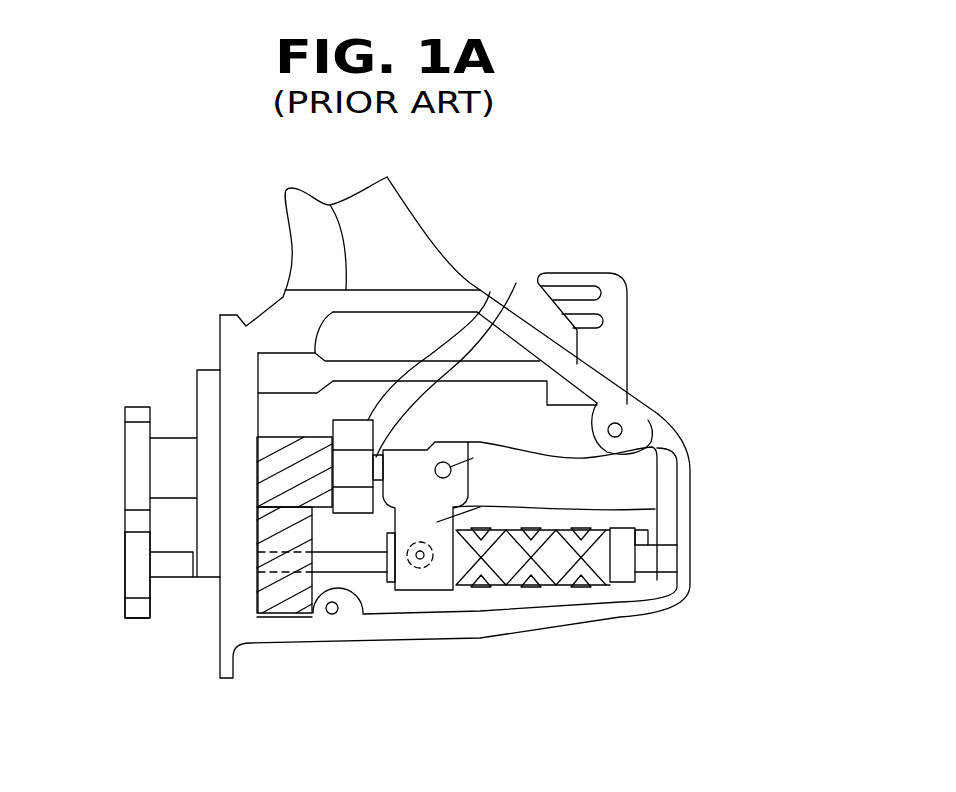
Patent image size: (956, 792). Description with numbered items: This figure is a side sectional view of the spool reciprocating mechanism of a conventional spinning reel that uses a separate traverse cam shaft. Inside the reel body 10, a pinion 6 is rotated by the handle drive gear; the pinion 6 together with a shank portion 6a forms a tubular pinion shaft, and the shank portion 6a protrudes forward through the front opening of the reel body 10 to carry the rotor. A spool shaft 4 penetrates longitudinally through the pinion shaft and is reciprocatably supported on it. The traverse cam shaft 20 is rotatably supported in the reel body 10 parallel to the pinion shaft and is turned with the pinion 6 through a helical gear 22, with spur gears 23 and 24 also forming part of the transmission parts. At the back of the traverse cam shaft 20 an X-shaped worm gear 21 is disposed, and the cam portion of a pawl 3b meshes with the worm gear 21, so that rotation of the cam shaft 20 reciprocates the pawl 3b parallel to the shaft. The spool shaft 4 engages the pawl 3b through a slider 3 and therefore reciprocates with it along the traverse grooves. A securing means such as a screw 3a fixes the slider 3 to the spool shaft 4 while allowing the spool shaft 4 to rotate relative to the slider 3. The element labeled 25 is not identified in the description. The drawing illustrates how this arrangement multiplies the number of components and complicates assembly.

The reel body 10 is at (533, 623).
The cam plate 25 is at (490, 290).
The spool shaft 4 is at (516, 283).
The screw 3a is at (657, 416).
The slider 3 is at (660, 510).
The pawl 3b is at (428, 563).
The worm gear 21 is at (594, 572).
The traverse cam shaft 20 is at (373, 560).
The pinion 6 is at (297, 437).
The helical gear 22 is at (275, 600).
The shank portion 6a is at (174, 442).
The spur gear 23 is at (135, 462).
The spur gear 24 is at (124, 561).